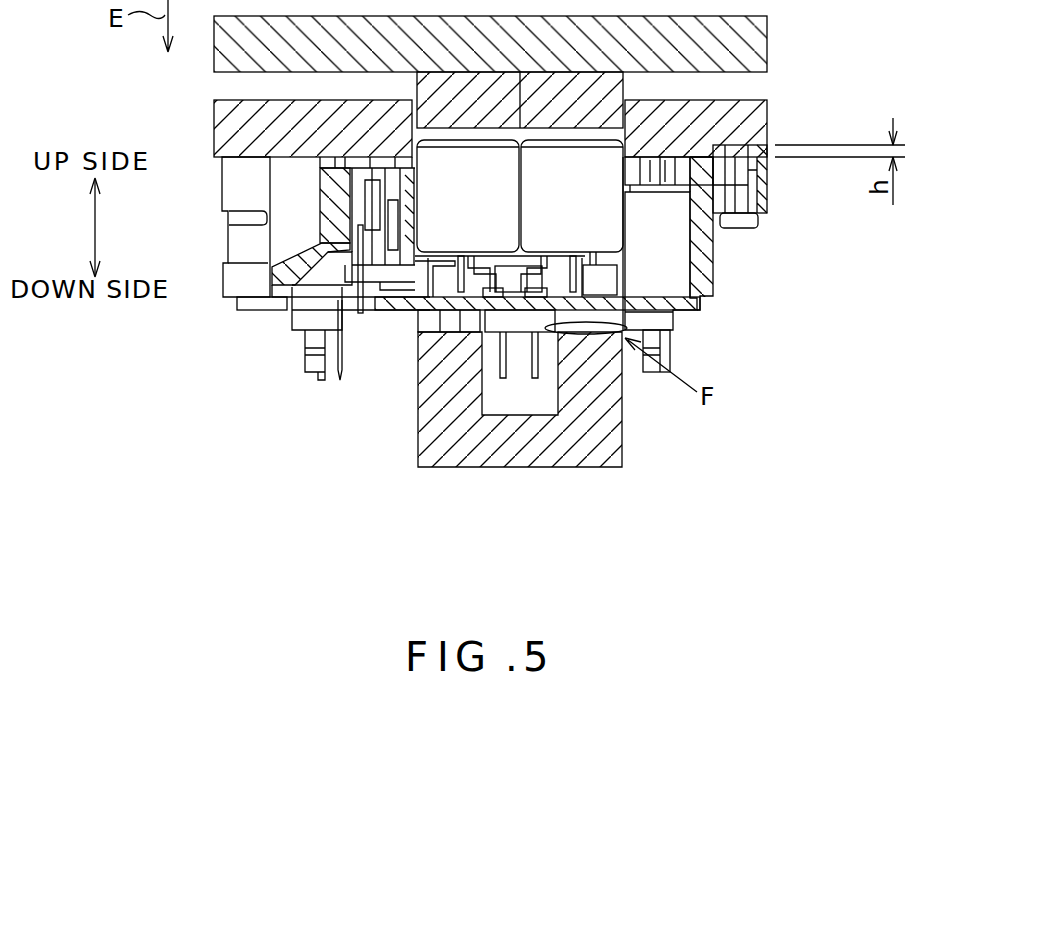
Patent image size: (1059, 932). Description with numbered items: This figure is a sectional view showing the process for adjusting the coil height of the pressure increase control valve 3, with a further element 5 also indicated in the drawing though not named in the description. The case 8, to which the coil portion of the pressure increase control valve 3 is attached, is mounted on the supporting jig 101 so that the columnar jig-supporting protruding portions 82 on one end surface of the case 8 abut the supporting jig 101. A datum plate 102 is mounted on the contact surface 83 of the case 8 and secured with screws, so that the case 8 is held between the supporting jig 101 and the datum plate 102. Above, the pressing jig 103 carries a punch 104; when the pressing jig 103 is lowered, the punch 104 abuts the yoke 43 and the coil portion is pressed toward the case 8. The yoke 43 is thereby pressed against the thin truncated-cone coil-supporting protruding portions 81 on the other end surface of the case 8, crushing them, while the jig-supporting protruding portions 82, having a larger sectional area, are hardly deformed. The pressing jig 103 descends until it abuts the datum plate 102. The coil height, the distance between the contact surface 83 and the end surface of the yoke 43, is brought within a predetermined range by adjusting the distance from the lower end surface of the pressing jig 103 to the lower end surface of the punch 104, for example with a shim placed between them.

The pressing jig 103 is at (768, 38).
The punch 104 is at (610, 90).
The datum plate 102 is at (770, 120).
The contact surface 83 is at (735, 185).
The yoke 43 is at (445, 178).
The pressure increase control valve 3 is at (592, 232).
The connector housing 5 is at (437, 225).
The coil-supporting protruding portions 81 is at (595, 277).
The case 8 is at (470, 310).
The jig-supporting protruding portions 82 is at (668, 335).
The supporting jig 101 is at (612, 427).